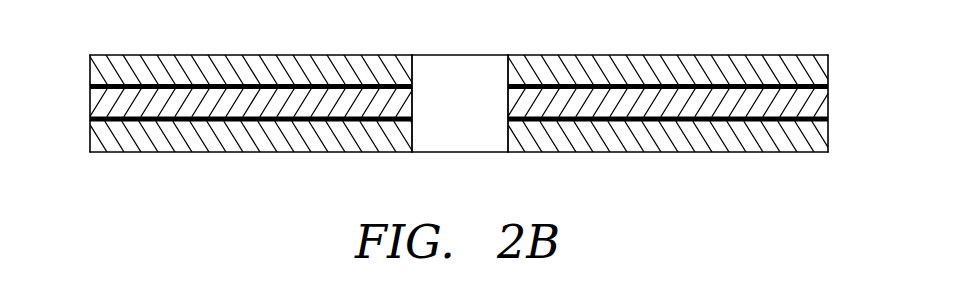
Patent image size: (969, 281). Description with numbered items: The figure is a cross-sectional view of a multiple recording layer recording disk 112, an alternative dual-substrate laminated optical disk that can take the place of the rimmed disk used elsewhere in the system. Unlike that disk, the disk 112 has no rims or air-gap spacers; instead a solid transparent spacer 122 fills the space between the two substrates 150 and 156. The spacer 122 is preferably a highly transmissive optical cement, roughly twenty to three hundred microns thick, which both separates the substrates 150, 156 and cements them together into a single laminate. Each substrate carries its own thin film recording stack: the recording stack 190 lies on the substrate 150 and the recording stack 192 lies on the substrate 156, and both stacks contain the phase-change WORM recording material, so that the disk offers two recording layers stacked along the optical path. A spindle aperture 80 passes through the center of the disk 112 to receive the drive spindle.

The multiple recording layer recording disk 112 is at (453, 107).
The substrate 156 is at (90, 77).
The substrate 150 is at (90, 142).
The solid transparent spacer 122 is at (212, 105).
The recording stack 192 is at (780, 86).
The recording stack 190 is at (782, 121).
The spindle aperture 80 is at (487, 138).